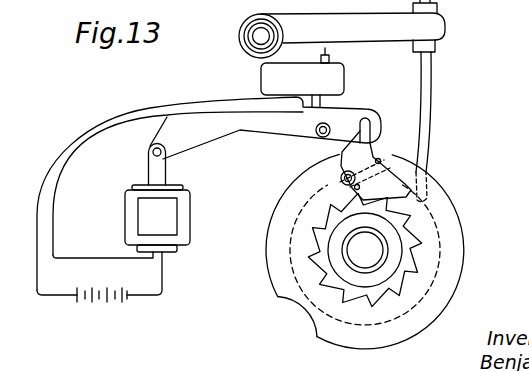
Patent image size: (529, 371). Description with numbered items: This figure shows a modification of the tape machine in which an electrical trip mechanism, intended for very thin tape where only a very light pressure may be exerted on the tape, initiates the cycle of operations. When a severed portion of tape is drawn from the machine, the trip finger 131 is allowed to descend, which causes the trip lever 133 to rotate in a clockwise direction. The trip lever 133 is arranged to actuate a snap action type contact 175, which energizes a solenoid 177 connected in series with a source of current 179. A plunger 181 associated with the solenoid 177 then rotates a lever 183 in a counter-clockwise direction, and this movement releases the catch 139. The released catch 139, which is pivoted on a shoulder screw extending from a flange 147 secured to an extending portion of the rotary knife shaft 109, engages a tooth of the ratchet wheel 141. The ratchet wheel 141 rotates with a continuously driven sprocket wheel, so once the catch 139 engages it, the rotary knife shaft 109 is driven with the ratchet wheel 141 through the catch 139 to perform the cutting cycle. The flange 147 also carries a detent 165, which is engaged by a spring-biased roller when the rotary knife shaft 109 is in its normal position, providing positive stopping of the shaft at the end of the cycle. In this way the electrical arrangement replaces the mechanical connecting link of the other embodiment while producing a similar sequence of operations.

The trip lever 133 is at (442, 22).
The trip finger 131 is at (433, 95).
The snap action type contact 175 is at (345, 77).
The lever 183 is at (238, 150).
The catch 139 is at (367, 144).
The ratchet wheel 141 is at (403, 222).
The plunger 181 is at (165, 166).
The solenoid 177 is at (182, 217).
The source of current 179 is at (97, 297).
The flange 147 is at (452, 270).
The rotary knife shaft 109 is at (430, 236).
The detent 165 is at (306, 314).